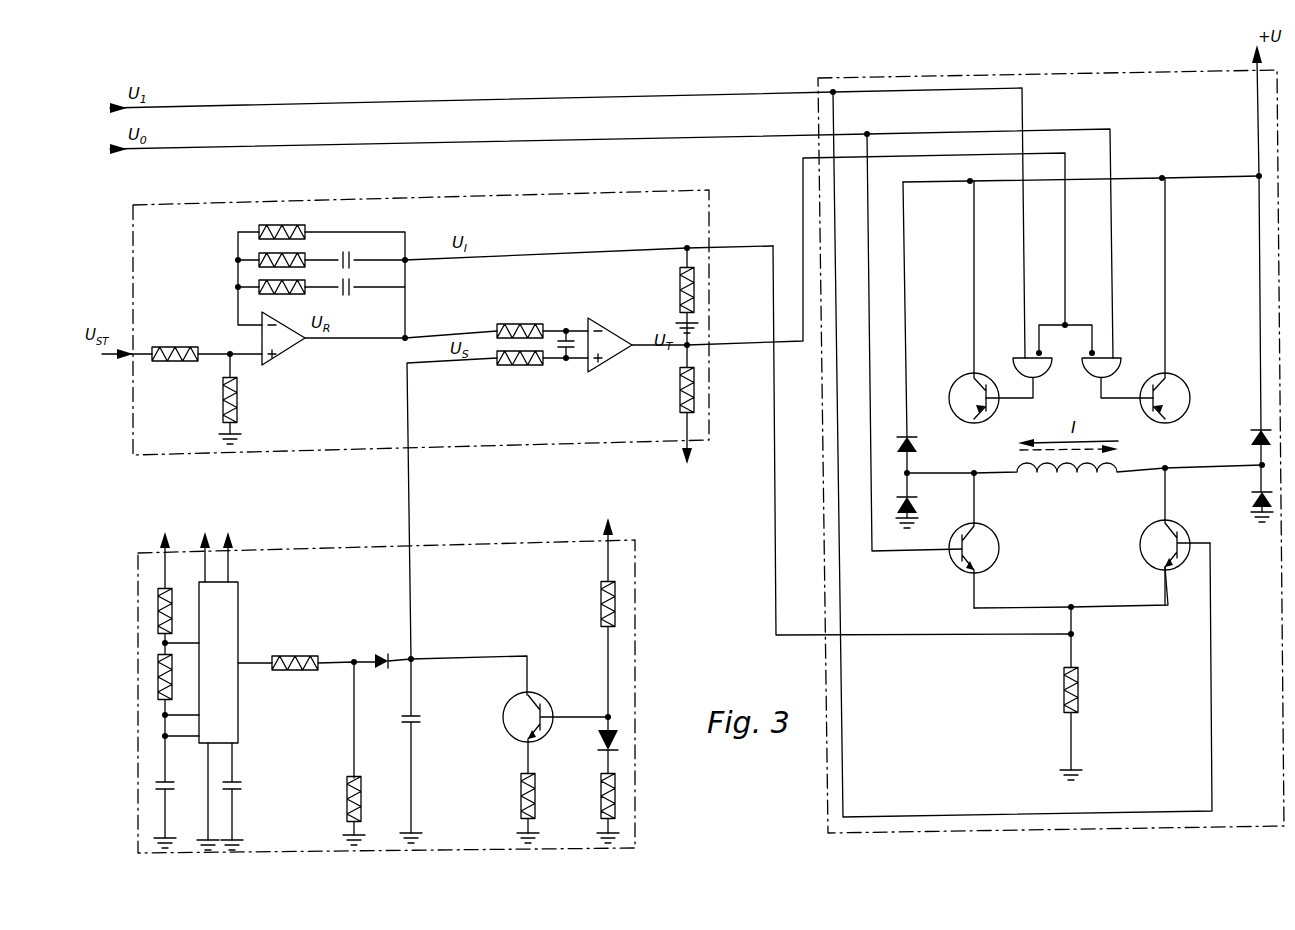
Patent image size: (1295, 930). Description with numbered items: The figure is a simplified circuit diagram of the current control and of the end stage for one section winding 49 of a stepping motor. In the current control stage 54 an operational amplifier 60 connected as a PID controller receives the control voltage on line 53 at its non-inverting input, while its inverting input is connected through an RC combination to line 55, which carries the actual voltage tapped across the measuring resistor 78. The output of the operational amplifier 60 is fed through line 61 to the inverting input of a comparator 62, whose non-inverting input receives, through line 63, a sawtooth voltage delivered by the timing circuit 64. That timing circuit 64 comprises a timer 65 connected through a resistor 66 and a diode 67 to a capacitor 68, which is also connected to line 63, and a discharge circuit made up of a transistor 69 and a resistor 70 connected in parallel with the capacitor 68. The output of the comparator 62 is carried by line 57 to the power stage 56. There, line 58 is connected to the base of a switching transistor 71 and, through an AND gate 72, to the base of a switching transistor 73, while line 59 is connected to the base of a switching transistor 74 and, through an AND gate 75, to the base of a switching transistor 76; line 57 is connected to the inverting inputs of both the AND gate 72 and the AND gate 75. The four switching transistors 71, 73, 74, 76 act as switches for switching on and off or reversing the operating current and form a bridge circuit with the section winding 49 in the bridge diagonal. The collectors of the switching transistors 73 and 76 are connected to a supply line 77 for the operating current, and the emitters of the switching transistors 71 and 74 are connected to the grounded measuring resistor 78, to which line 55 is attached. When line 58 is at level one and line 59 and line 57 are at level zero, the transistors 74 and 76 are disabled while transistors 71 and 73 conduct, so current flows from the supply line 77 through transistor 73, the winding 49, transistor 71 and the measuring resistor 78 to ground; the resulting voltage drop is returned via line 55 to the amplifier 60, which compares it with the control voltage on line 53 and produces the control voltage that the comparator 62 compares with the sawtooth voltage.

The section winding 49 is at (1058, 481).
The line 53 is at (142, 359).
The current control stage 54 is at (512, 192).
The line 55 is at (533, 249).
The power stage 56 is at (1093, 73).
The line 57 is at (755, 345).
The line 58 is at (417, 139).
The line 59 is at (404, 97).
The operational amplifier 60 is at (283, 342).
The line 61 is at (378, 338).
The comparator 62 is at (609, 333).
The line 63 is at (412, 499).
The timing circuit 64 is at (470, 543).
The timer 65 is at (232, 611).
The resistor 66 is at (300, 656).
The diode 67 is at (380, 648).
The capacitor 68 is at (419, 719).
The transistor 69 is at (508, 728).
The resistor 70 is at (537, 795).
The switching transistor 71 is at (990, 550).
The AND gate 72 is at (1115, 361).
The switching transistor 73 is at (1190, 395).
The switching transistor 74 is at (1149, 548).
The AND gate 75 is at (1045, 363).
The switching transistor 76 is at (961, 381).
The supply line 77 is at (1257, 111).
The measuring resistor 78 is at (1077, 700).